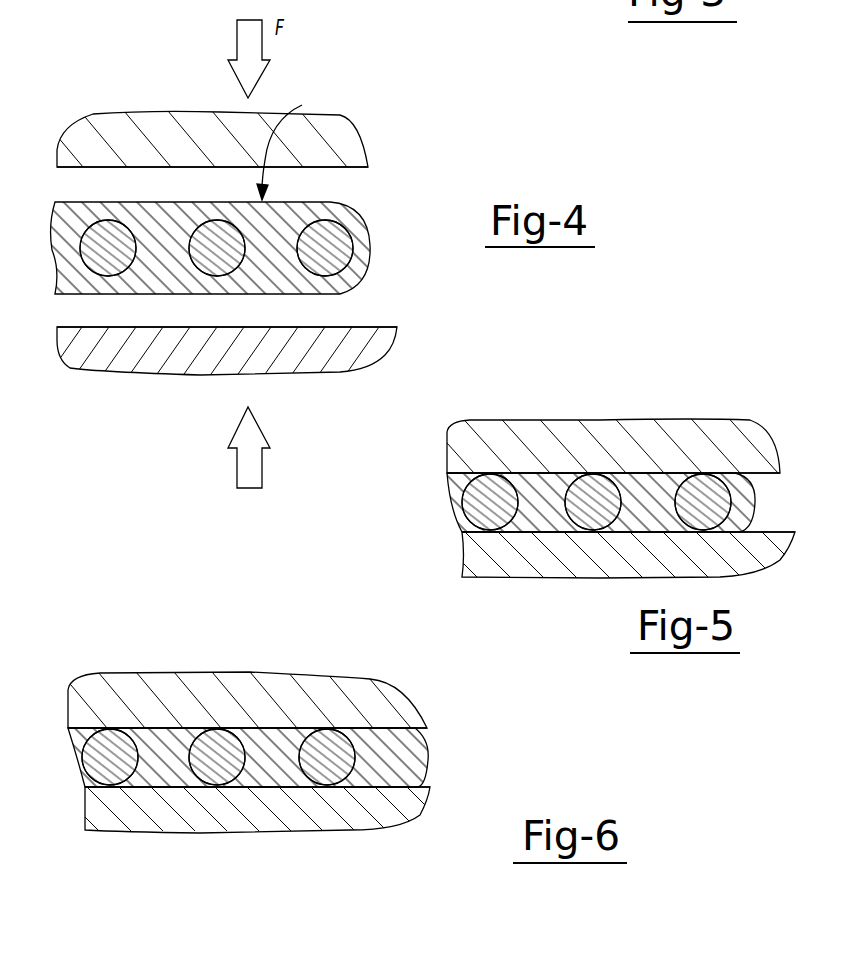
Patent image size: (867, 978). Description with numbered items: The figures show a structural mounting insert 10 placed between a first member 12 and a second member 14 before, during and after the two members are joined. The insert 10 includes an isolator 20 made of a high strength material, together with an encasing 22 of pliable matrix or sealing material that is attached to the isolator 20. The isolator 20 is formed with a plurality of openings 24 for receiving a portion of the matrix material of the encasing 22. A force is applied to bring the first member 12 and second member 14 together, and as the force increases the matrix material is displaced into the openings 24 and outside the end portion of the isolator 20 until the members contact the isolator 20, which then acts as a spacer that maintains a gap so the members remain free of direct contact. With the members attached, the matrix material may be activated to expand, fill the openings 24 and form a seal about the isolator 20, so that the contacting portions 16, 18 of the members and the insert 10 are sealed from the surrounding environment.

In FIG. 4, the insert 10 is at (230, 236).
In FIG. 5, the insert 10 is at (614, 499).
In FIG. 6, the insert 10 is at (263, 747).
In FIG. 4, the first member 12 is at (178, 122).
In FIG. 5, the first member 12 is at (481, 434).
In FIG. 6, the first member 12 is at (318, 686).
In FIG. 4, the second member 14 is at (354, 352).
In FIG. 5, the second member 14 is at (485, 566).
In FIG. 6, the second member 14 is at (355, 832).
In FIG. 4, the contacting portion 16 is at (327, 170).
In FIG. 5, the contacting portion 16 is at (655, 478).
In FIG. 6, the contacting portion 16 is at (432, 735).
In FIG. 4, the contacting portion 18 is at (358, 315).
In FIG. 5, the contacting portion 18 is at (528, 528).
In FIG. 6, the contacting portion 18 is at (428, 775).
In FIG. 4, the isolator 20 is at (102, 264).
In FIG. 5, the isolator 20 is at (506, 493).
In FIG. 6, the isolator 20 is at (338, 745).
In FIG. 4, the encasing 22 is at (268, 265).
In FIG. 5, the encasing 22 is at (545, 490).
In FIG. 6, the encasing 22 is at (254, 745).
In FIG. 4, the openings 24 is at (289, 144).